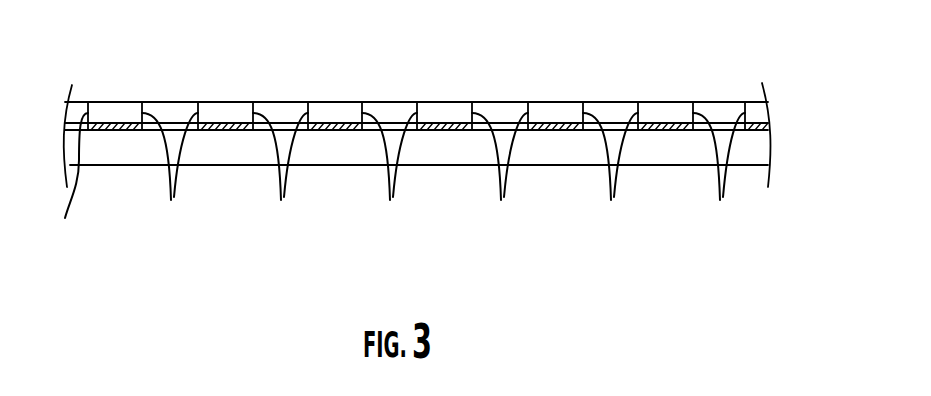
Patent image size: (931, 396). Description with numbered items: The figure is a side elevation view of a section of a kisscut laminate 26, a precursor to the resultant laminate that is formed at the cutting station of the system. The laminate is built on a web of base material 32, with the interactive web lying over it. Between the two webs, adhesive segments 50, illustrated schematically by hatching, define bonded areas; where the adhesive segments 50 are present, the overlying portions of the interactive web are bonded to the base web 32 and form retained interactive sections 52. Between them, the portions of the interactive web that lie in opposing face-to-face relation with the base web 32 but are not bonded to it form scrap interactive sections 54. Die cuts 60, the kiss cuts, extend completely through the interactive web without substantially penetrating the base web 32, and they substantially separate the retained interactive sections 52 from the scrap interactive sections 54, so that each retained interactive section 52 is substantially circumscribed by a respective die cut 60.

The kisscut laminate 26 is at (158, 282).
The web of base material 32 is at (752, 150).
The adhesive segments 50 is at (112, 130).
The retained interactive sections 52 is at (115, 112).
The scrap interactive sections 54 is at (172, 112).
The die cuts 60 is at (394, 183).